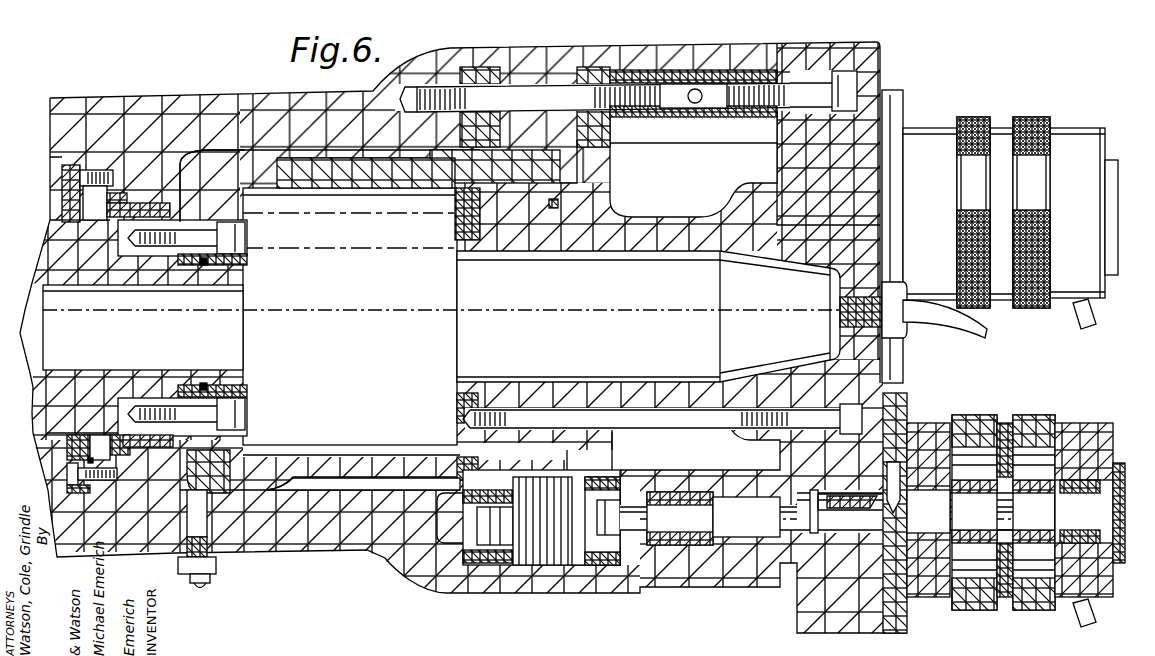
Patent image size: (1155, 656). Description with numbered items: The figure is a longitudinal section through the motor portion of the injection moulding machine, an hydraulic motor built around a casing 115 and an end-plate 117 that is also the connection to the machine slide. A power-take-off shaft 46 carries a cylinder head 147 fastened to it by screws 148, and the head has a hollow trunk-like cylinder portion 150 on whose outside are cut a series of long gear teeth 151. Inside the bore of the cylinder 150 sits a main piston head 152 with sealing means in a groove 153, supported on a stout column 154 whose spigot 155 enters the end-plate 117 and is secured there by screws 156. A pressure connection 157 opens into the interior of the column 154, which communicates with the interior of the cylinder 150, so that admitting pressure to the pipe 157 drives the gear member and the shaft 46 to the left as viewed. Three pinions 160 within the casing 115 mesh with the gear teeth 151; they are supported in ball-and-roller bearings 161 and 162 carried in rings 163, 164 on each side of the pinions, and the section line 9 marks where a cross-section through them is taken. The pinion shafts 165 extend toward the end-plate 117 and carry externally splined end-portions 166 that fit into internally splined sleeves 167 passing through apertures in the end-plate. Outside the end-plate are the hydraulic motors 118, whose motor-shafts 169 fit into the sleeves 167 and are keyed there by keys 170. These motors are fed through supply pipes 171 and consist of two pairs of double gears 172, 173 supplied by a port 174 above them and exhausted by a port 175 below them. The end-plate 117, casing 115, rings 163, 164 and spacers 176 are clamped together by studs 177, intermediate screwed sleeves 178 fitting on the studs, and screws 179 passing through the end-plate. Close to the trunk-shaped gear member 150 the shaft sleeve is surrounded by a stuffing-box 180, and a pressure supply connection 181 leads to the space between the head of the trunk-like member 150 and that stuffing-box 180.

The section line 9— 9 is at (507, 30).
The power-take-off shaft 46 is at (108, 187).
The casing 115 is at (611, 150).
The end-plate 117 is at (850, 62).
The hydraulic vane-motors 118 is at (958, 130).
The cylinder head 147 is at (210, 172).
The screws 148 is at (180, 192).
The trunk-like cylinder portion 150 is at (350, 316).
The gear teeth 151 is at (371, 483).
The main piston head 152 is at (478, 212).
The groove 153 is at (468, 150).
The column 154 is at (683, 232).
The spigot 155 is at (923, 148).
The screws 156 is at (865, 322).
The pressure connection 157 is at (978, 330).
The pinions 160 is at (521, 554).
The ball-and-roller bearing 161 is at (457, 547).
The ball-and-roller bearing 162 is at (613, 563).
The ring 163 is at (547, 60).
The ring 164 is at (597, 135).
The pinion shafts 165 is at (613, 505).
The externally splined end-portions 166 is at (674, 508).
The internally splined sleeves 167 is at (725, 495).
The motor-shafts 169 is at (890, 513).
The keys 170 is at (893, 397).
The supply pipes 171 is at (1074, 307).
The double gears 172 is at (968, 477).
The double gears 173 is at (1040, 477).
The port 174 is at (1025, 455).
The port 175 is at (977, 570).
The spacers 176 is at (612, 188).
The studs 177 is at (677, 110).
The screwed sleeves 178 is at (727, 108).
The screws 179 is at (822, 88).
The stuffing-box 180 is at (78, 165).
The pressure supply connection 181 is at (212, 583).